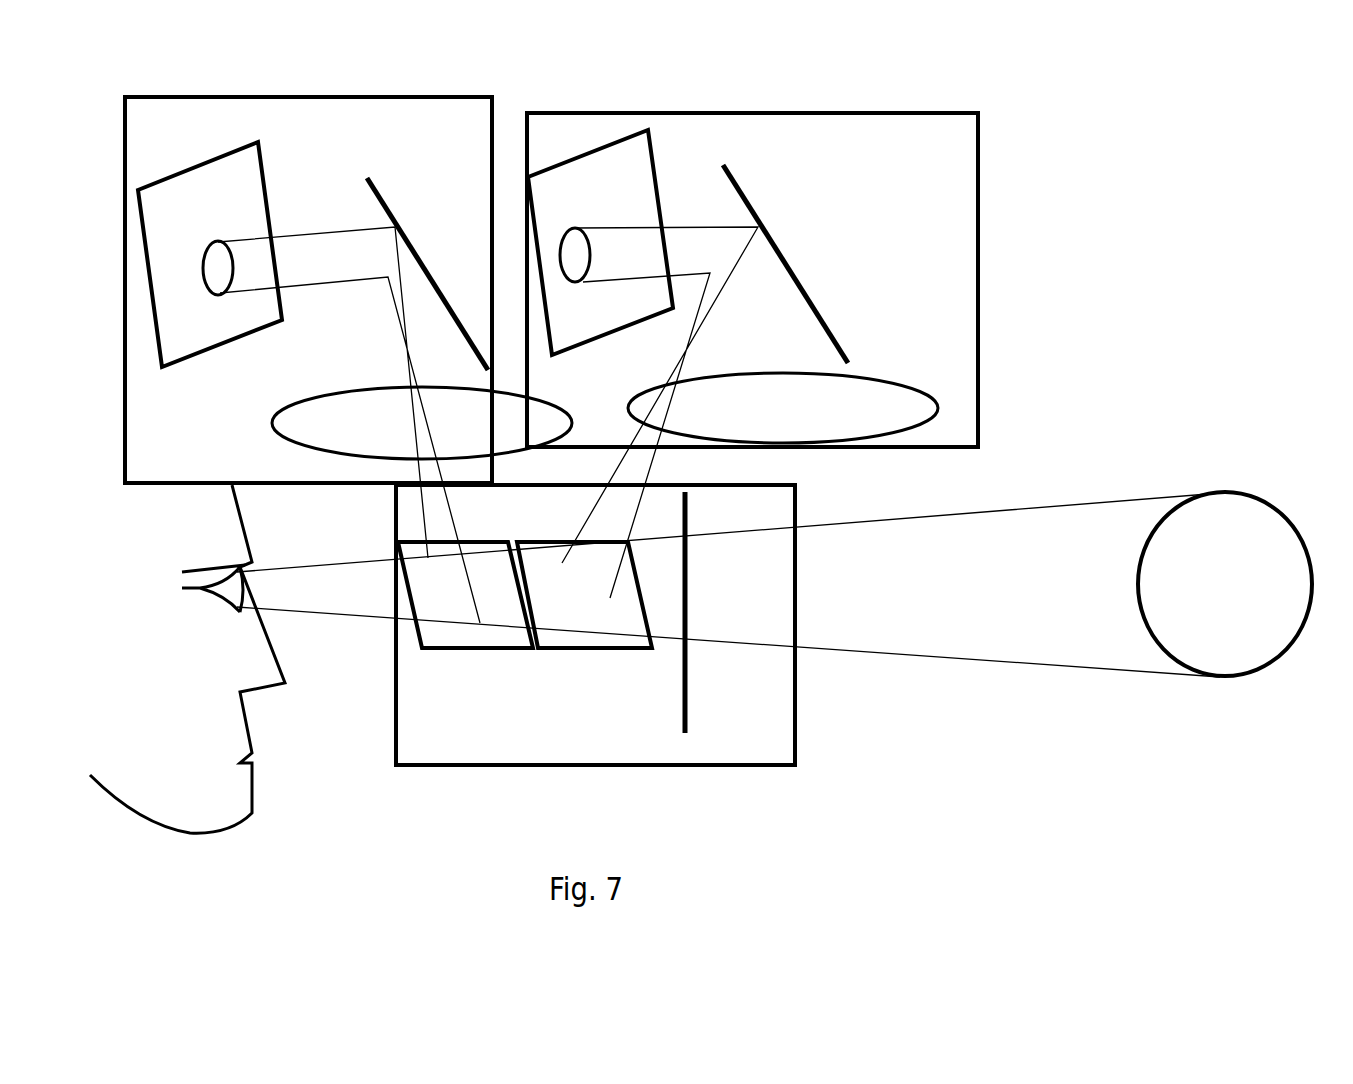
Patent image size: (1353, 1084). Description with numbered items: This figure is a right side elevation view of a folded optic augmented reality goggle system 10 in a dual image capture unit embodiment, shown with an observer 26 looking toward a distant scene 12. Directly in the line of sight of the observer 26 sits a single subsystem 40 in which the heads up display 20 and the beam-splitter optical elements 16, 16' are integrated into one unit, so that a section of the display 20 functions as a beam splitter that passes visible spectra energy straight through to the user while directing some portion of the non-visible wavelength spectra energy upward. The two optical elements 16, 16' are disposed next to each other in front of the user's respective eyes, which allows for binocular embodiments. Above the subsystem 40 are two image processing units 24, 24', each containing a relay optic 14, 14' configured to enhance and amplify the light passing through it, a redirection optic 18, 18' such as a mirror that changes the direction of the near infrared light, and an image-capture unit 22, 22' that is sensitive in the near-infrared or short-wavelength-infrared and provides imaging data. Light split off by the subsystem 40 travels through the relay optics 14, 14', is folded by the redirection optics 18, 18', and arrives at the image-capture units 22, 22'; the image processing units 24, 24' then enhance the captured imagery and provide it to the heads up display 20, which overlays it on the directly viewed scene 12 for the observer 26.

The augmented reality goggle system 10 is at (1088, 190).
The scene 12 is at (1215, 597).
The relay optic 14 is at (422, 423).
The relay optic 14' is at (783, 408).
The beam-splitter optical element 16 is at (465, 595).
The beam-splitter optical element 16' is at (584, 595).
The redirection optic 18 is at (427, 268).
The redirection optic 18' is at (785, 258).
The heads-up display 20 is at (688, 700).
The image-capture unit 22 is at (221, 254).
The image-capture unit 22' is at (600, 242).
The image processing unit 24 is at (399, 290).
The image processing unit 24' is at (752, 280).
The observer 26 is at (1005, 667).
The single subsystem 40 is at (797, 760).